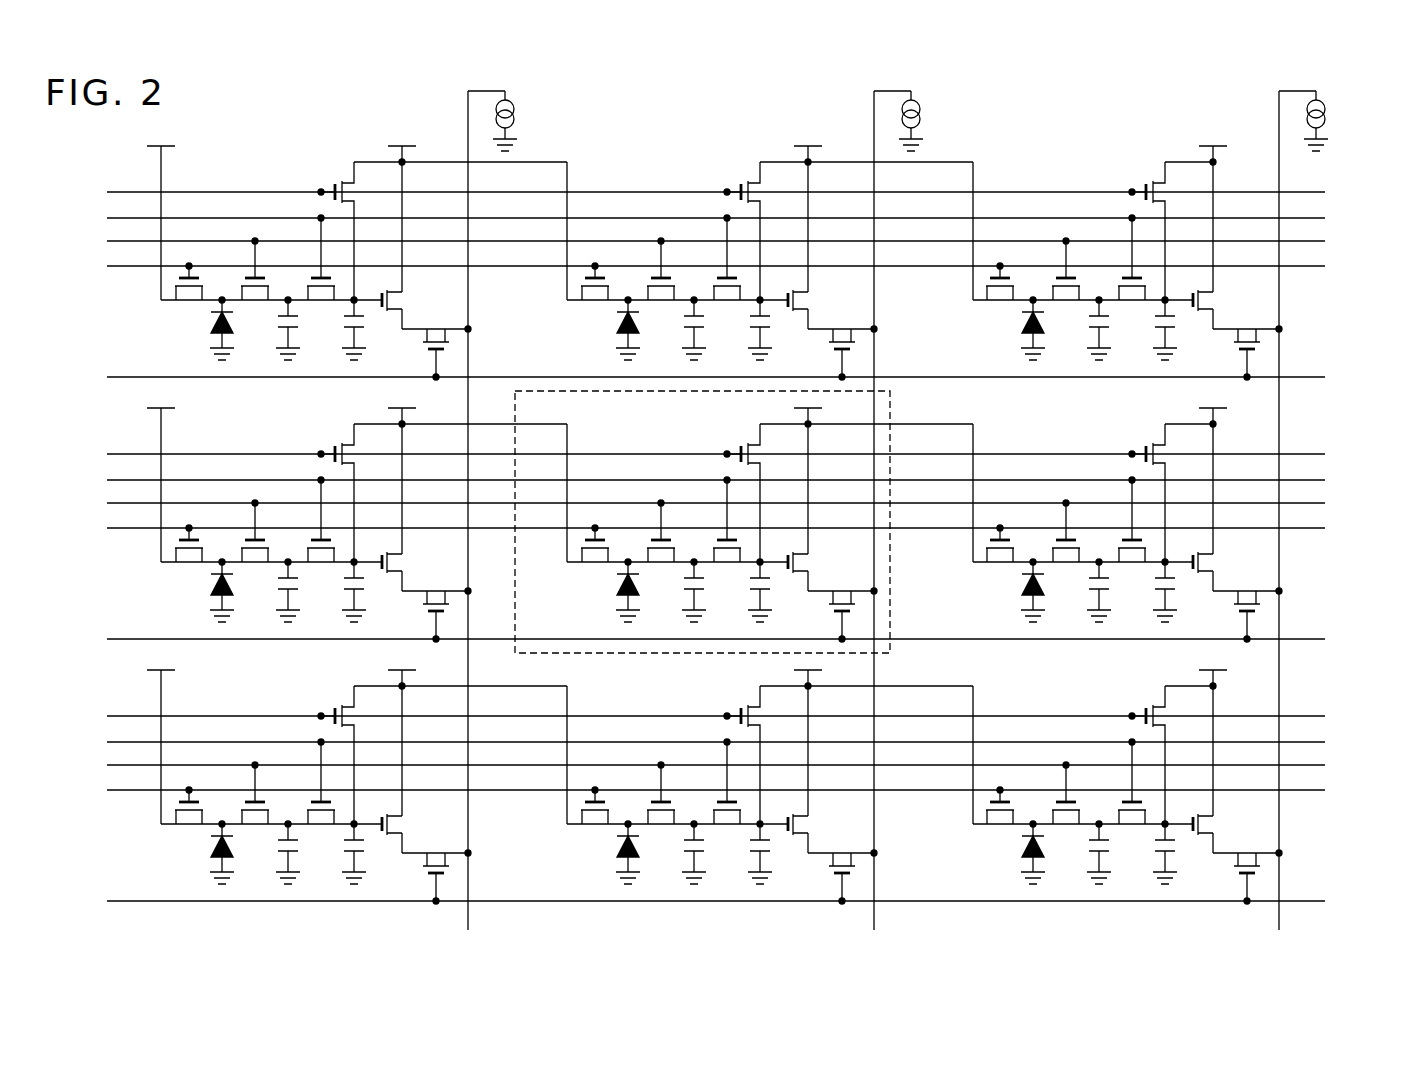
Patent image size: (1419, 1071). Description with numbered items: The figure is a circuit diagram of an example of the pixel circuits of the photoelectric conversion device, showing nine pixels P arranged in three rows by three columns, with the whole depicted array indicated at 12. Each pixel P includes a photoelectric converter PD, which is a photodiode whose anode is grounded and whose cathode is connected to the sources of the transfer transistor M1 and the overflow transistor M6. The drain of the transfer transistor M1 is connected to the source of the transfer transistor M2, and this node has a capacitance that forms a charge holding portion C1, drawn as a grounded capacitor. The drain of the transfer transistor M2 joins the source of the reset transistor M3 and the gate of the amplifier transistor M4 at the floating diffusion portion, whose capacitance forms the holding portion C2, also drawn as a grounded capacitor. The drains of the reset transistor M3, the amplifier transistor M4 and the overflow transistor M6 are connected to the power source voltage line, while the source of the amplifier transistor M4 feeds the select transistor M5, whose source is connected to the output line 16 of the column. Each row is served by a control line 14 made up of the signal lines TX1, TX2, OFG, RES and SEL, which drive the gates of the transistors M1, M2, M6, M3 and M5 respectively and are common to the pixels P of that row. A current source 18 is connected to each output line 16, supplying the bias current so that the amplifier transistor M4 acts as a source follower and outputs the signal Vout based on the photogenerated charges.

The pixel array 12 is at (1108, 107).
The control line 14 is at (735, 545).
The output line 16 is at (468, 112).
The current source 18 is at (520, 104).
The pixel P is at (532, 391).
The photoelectric converter PD is at (610, 595).
The transfer transistor M1 is at (656, 483).
The transfer transistor M2 is at (710, 483).
The reset transistor M3 is at (741, 483).
The amplifier transistor M4 is at (799, 588).
The select transistor M5 is at (842, 590).
The overflow transistor M6 is at (600, 483).
The holding portion C1 is at (677, 595).
The holding portion C2 is at (743, 595).